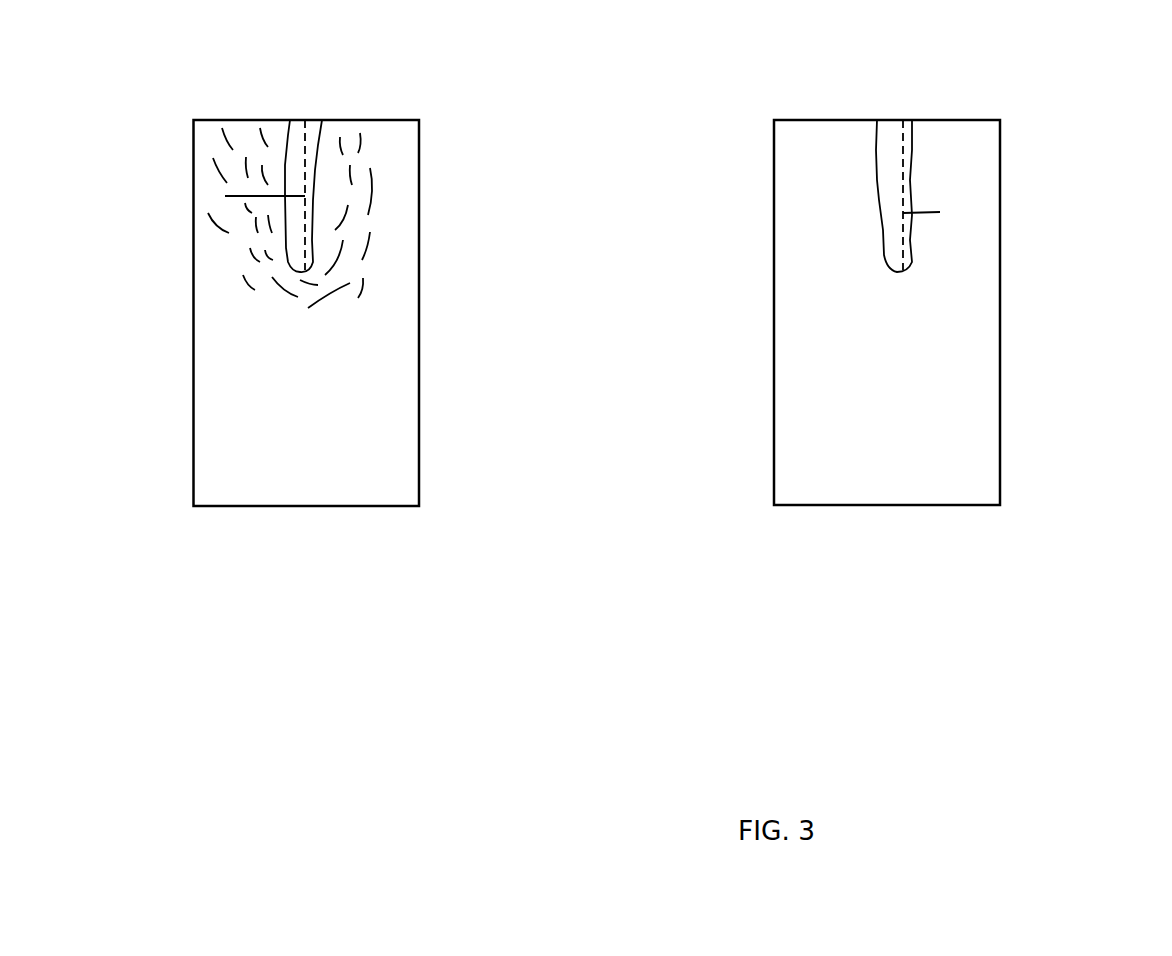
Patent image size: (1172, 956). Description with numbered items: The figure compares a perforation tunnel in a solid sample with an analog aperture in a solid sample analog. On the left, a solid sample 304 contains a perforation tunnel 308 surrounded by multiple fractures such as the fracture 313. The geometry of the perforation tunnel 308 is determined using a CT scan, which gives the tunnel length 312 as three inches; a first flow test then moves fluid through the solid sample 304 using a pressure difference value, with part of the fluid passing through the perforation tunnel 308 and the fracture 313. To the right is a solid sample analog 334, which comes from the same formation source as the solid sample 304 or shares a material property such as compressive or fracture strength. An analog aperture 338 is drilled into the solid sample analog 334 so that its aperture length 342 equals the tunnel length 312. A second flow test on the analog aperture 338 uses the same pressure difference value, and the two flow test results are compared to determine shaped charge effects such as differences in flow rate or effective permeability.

The solid sample 304 is at (384, 121).
The perforation tunnel 308 is at (292, 129).
The tunnel length 312 is at (225, 196).
The fracture 313 is at (217, 170).
The solid sample analog 334 is at (957, 121).
The analog aperture 338 is at (890, 130).
The aperture length 342 is at (940, 212).